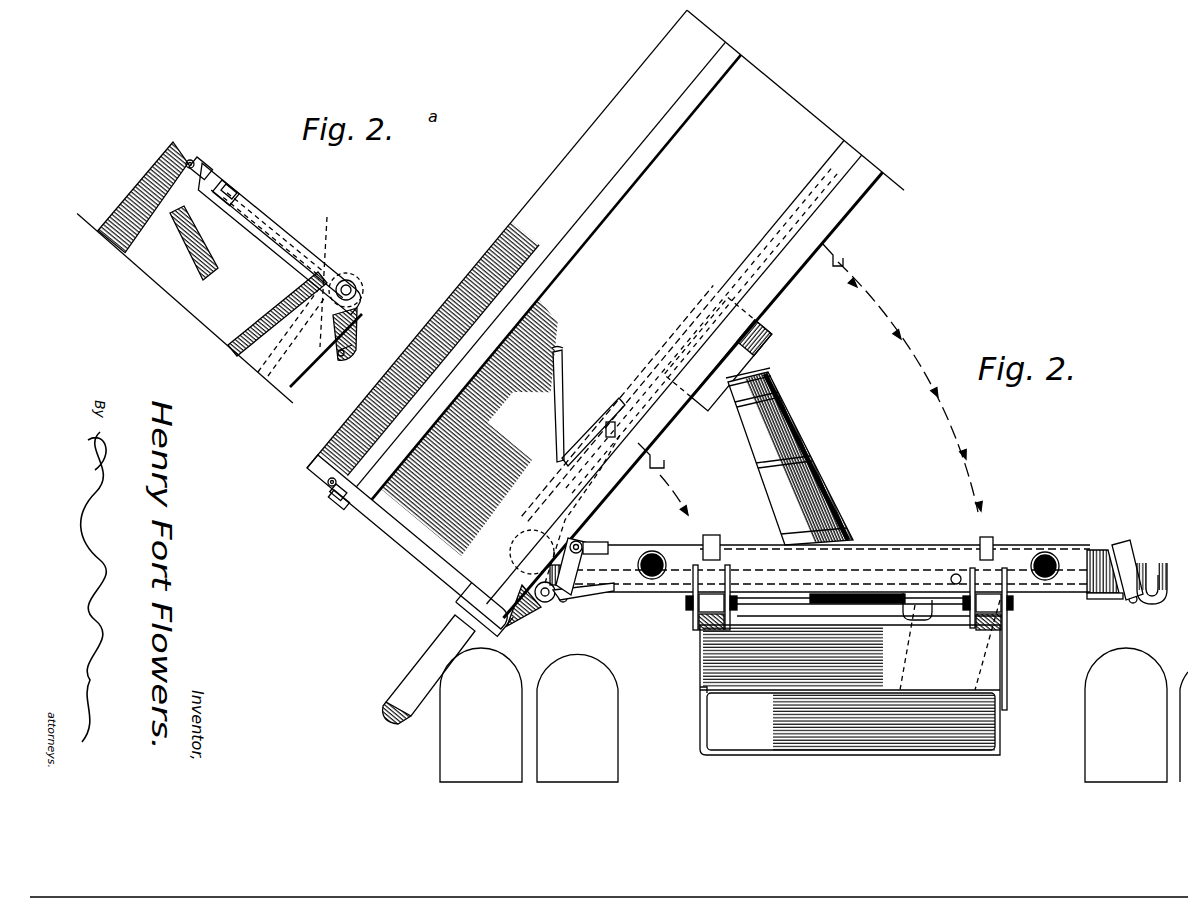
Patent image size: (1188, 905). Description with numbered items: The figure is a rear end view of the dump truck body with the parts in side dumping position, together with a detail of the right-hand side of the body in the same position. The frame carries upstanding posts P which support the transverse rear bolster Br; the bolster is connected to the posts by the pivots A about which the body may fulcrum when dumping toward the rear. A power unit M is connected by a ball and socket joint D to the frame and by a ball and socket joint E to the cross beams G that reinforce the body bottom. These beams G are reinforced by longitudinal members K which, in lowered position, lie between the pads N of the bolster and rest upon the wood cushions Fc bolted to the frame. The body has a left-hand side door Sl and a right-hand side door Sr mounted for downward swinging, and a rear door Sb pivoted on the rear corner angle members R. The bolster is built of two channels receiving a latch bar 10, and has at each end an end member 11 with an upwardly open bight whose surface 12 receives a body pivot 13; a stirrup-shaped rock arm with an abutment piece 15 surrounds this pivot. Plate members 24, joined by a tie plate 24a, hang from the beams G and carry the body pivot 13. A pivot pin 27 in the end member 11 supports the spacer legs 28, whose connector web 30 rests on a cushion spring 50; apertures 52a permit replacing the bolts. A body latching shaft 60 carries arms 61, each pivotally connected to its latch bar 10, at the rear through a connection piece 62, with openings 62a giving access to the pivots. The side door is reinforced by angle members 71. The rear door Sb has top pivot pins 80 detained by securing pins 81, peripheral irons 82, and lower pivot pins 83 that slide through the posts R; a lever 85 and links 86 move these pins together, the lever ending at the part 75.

In FIG. 2, the latch bar 10 is at (652, 579).
In FIG. 2, the bolster end member 11 is at (583, 600).
In FIG. 2, the bight surface 12 is at (1173, 597).
In FIG. 2, the body pivot 13 is at (548, 603).
In FIG. 2a, the body pivot 13 is at (340, 358).
In FIG. 2, the abutment piece 15 is at (565, 509).
In FIG. 2, the plate members 24 is at (522, 612).
In FIG. 2a, the plate members 24 is at (358, 323).
In FIG. 2a, the tie plate 24a is at (356, 336).
In FIG. 2, the pivot pin 27 is at (567, 603).
In FIG. 2, the spacer member legs 28 is at (572, 563).
In FIG. 2, the connector web 30 is at (590, 541).
In FIG. 2, the cushion spring 50 is at (603, 553).
In FIG. 2, the apertures 52a is at (660, 558).
In FIG. 2, the body latching shaft 60 is at (973, 645).
In FIG. 2, the arm 61 is at (897, 647).
In FIG. 2, the connection piece 62 is at (913, 593).
In FIG. 2, the openings 62a is at (958, 573).
In FIG. 2a, the angle members 71 is at (333, 276).
In FIG. 2, the lever end 75 is at (386, 708).
In FIG. 2, the top pivot pins 80 is at (338, 493).
In FIG. 2a, the top pivot pins 80 is at (208, 165).
In FIG. 2, the securing pins 81 is at (328, 486).
In FIG. 2a, the securing pins 81 is at (188, 160).
In FIG. 2, the peripheral irons 82 is at (580, 247).
In FIG. 2a, the peripheral irons 82 is at (232, 238).
In FIG. 2, the lower pivot pins 83 is at (470, 604).
In FIG. 2a, the lower pivot pins 83 is at (344, 272).
In FIG. 2, the lever 85 is at (557, 398).
In FIG. 2, the links 86 is at (612, 418).
In FIG. 2, the rear door Sb is at (796, 100).
In FIG. 2a, the rear door Sb is at (228, 330).
In FIG. 2a, the right-hand side door Sr is at (272, 223).
In FIG. 2, the angle members R is at (388, 537).
In FIG. 2a, the angle members R is at (287, 230).
In FIG. 2, the cross beams G is at (685, 388).
In FIG. 2, the ball and socket joint E is at (770, 327).
In FIG. 2, the power unit M is at (792, 428).
In FIG. 2, the longitudinal members K is at (848, 262).
In FIG. 2, the pads N is at (716, 533).
In FIG. 2, the rear bolster Br is at (880, 556).
In FIG. 2, the ball and socket joint D is at (797, 596).
In FIG. 2, the pivots A is at (688, 606).
In FIG. 2, the posts P is at (698, 625).
In FIG. 2, the wood cushions Fc is at (702, 641).
In FIG. 2, the left-hand side door Sl is at (430, 660).